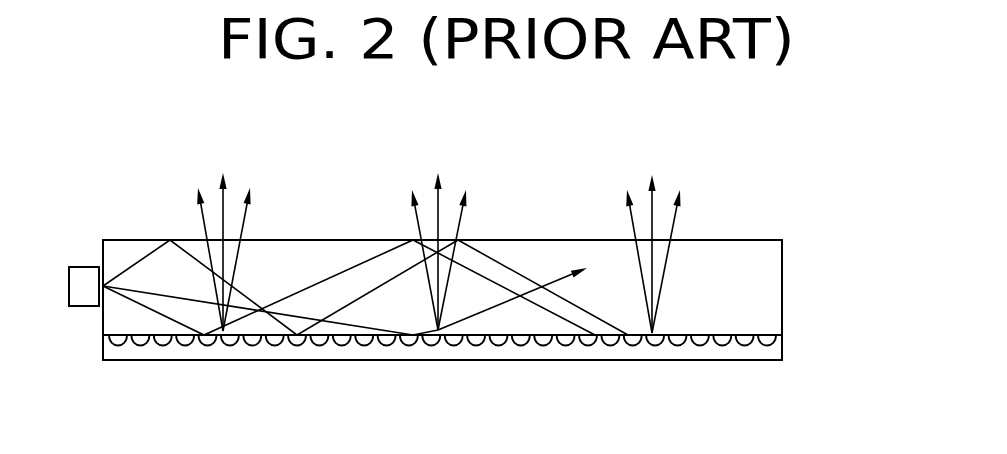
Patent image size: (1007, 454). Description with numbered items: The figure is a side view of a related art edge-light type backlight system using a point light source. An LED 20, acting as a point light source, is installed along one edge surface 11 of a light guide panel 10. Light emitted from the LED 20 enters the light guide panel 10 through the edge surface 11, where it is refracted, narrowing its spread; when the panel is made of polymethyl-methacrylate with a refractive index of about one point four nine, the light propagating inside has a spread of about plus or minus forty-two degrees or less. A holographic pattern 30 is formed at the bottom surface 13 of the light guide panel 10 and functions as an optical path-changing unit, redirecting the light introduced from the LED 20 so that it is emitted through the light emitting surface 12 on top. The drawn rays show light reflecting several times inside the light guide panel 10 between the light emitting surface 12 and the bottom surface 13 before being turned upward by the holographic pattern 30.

The light guide panel 10 is at (817, 200).
The edge surface 11 is at (103, 250).
The light emitting surface 12 is at (732, 240).
The bottom surface 13 is at (747, 337).
The LED 20 is at (69, 286).
The holographic pattern 30 is at (437, 353).